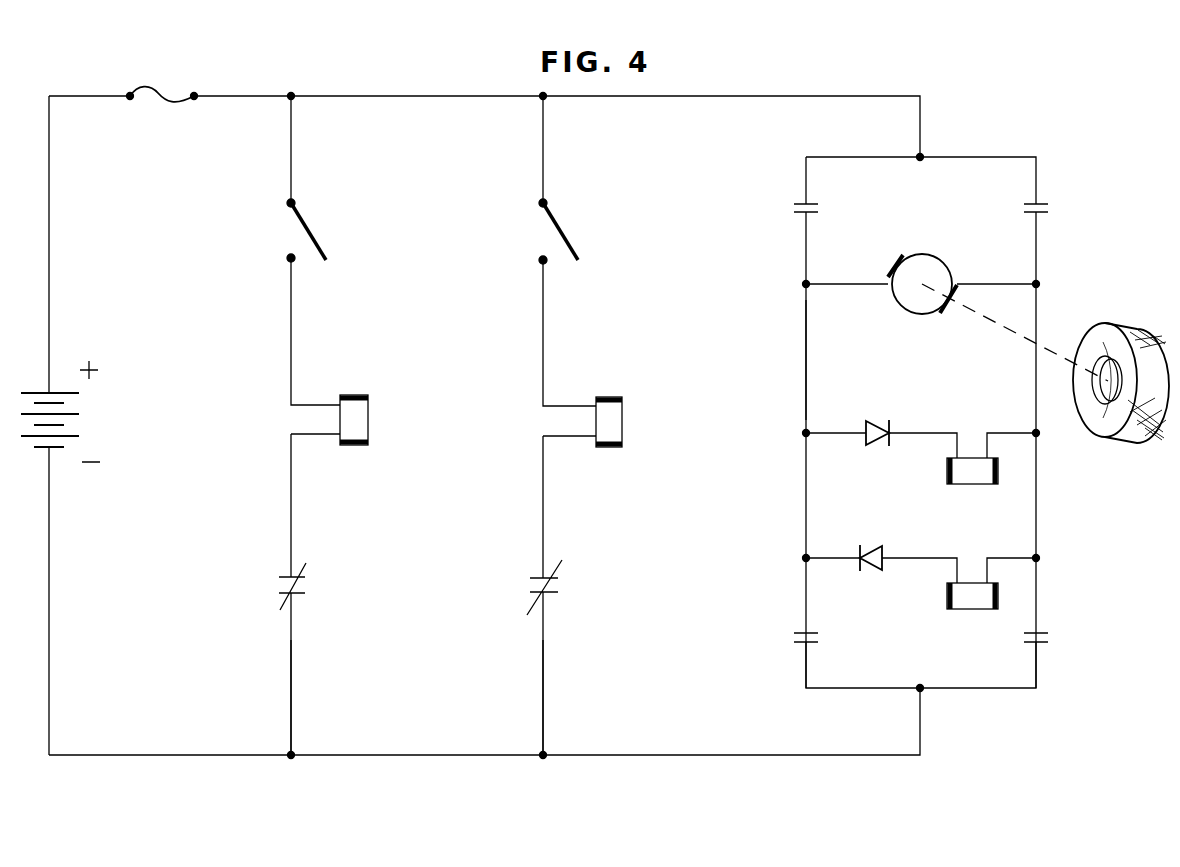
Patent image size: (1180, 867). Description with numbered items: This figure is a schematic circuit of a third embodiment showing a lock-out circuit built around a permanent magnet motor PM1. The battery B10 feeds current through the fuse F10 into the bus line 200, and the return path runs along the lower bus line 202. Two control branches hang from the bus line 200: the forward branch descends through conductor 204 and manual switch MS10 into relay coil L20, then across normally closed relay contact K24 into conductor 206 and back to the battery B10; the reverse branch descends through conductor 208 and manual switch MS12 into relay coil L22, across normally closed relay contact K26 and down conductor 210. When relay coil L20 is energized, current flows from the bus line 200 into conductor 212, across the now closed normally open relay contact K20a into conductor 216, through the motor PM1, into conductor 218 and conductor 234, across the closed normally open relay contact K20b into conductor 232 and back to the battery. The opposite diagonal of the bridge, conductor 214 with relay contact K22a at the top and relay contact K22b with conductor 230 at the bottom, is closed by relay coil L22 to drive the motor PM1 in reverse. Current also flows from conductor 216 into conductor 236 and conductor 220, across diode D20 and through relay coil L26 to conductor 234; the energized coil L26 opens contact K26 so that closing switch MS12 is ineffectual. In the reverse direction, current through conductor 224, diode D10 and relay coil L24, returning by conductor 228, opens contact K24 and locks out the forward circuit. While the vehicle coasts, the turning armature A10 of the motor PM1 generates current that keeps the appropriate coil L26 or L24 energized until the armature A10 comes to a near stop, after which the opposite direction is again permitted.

The bus line 200 is at (262, 96).
The negative supply line 202 is at (240, 756).
The line to switch MS10 204 is at (293, 157).
The conductor 206 is at (293, 690).
The line to switch MS12 208 is at (545, 158).
The line from contact K26 210 is at (545, 690).
The conductor 212 is at (849, 157).
The bridge upper right line 214 is at (987, 157).
The conductor 216 is at (840, 282).
The conductor 218 is at (990, 282).
The conductor 220 is at (830, 432).
The diode D10 line 224 is at (830, 557).
The coil L24 line 228 is at (1005, 558).
The bridge lower left line 230 is at (800, 670).
The conductor 232 is at (1036, 680).
The conductor 234 is at (1036, 325).
The conductor 236 is at (806, 360).
The fuse F10 is at (158, 100).
The battery B10 is at (78, 436).
The manual switch MS10 is at (318, 237).
The switch MS12 is at (570, 238).
The relay coil L20 is at (368, 429).
The relay coil L22 is at (622, 428).
The normally closed relay contact K24 is at (300, 592).
The normally closed relay contact K26 is at (553, 592).
The normally open relay contact K20a is at (818, 205).
The relay contact K22a is at (1048, 205).
The normally open relay contact K20b is at (1045, 633).
The relay contact K22b is at (797, 633).
The permanent magnet motor PM1 is at (926, 243).
The armature A10 is at (912, 294).
The diode D20 is at (878, 446).
The diode D10 is at (876, 571).
The relay coil L26 is at (968, 485).
The relay coil L24 is at (962, 609).